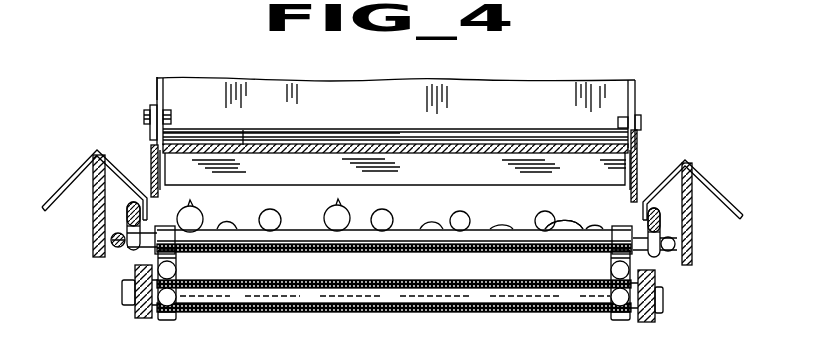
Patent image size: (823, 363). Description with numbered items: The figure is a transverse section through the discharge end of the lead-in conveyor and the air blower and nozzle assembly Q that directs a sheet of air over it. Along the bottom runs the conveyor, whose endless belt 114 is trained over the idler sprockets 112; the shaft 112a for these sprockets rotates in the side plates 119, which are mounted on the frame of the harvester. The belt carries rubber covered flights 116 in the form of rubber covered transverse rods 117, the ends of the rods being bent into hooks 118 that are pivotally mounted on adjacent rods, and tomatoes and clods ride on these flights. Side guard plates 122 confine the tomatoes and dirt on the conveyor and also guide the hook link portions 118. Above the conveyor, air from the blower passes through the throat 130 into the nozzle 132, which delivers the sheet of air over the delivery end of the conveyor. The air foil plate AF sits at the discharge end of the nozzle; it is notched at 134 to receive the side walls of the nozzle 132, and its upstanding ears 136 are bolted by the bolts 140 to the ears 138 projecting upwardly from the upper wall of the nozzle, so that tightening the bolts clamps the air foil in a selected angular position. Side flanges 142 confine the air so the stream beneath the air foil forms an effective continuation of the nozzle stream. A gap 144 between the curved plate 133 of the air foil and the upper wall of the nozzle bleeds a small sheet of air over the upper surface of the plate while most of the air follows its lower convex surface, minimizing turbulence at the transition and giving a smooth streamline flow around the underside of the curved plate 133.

The idler sprockets 112 is at (180, 270).
The shaft 112a is at (276, 312).
The endless belt 114 is at (444, 260).
The rubber covered flights 116 is at (375, 250).
The rubber covered transverse rods 117 is at (128, 215).
The hooks 118 is at (127, 233).
The side plates 119 is at (134, 272).
The side guard plates 122 is at (97, 152).
The throat 130 is at (328, 81).
The nozzle 132 is at (485, 135).
The curved plate 133 is at (412, 147).
The notch 134 is at (160, 139).
The upstanding ears 136 is at (150, 106).
The ears 138 is at (156, 81).
The bolts 140 is at (166, 118).
The side flanges 142 is at (151, 167).
The gap 144 is at (343, 134).
The air foil plate AF is at (243, 130).
The air blower and nozzle assembly Q is at (560, 86).